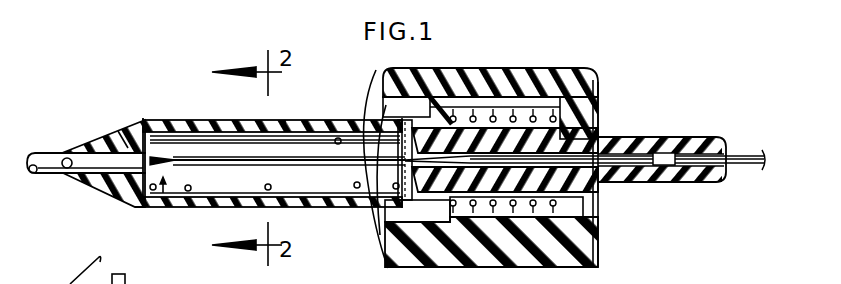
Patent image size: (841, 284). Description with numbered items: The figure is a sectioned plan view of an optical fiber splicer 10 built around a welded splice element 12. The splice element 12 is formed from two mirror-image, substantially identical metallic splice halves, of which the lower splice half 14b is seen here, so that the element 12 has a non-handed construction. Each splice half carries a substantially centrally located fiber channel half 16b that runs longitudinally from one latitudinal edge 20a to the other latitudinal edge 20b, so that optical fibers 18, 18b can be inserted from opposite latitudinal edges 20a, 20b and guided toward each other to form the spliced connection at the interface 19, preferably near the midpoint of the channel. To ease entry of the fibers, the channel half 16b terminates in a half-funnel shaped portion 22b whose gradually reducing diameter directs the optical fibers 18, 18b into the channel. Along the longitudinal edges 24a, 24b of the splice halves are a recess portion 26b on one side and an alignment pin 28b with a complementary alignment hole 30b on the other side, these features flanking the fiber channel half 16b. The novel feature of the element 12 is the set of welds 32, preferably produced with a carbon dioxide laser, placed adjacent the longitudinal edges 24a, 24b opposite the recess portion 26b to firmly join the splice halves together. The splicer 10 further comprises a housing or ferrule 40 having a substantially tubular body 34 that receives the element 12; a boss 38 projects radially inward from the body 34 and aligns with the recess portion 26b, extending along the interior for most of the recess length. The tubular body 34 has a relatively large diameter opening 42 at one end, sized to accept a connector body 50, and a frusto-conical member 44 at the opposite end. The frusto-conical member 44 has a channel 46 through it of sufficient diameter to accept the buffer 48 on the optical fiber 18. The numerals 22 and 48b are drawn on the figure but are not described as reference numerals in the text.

The optical fiber splicer 10 is at (612, 73).
The welded splice element 12 is at (324, 213).
The splice half 14b is at (155, 209).
The fiber channel half 16b is at (307, 138).
The optical fiber 18 is at (384, 200).
The optical fiber 18b is at (134, 127).
The interface 19 is at (231, 146).
The latitudinal edge 20a is at (375, 160).
The latitudinal edge 20b is at (142, 120).
The receptacle body 22 is at (400, 222).
The half-funnel shaped portion 22b is at (126, 205).
The longitudinal edge 24a is at (232, 113).
The longitudinal edge 24b is at (211, 206).
The recess portion 26b is at (182, 120).
The alignment pin 28b is at (184, 210).
The alignment hole 30b is at (352, 192).
The weld 32 is at (263, 186).
The tubular body 34 is at (289, 119).
The boss 38 is at (338, 137).
The ferrule 40 is at (70, 195).
The opening 42 is at (441, 108).
The frusto-conical member 44 is at (105, 134).
The channel 46 is at (58, 171).
The buffer 48 is at (654, 183).
The cable end 48b is at (44, 151).
The connector body 50 is at (606, 120).